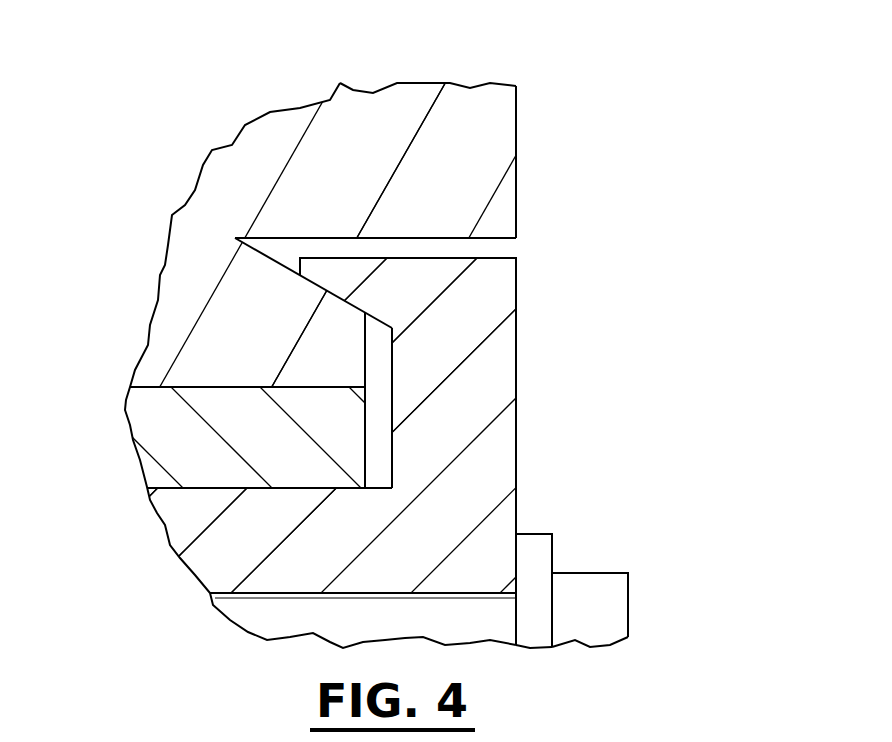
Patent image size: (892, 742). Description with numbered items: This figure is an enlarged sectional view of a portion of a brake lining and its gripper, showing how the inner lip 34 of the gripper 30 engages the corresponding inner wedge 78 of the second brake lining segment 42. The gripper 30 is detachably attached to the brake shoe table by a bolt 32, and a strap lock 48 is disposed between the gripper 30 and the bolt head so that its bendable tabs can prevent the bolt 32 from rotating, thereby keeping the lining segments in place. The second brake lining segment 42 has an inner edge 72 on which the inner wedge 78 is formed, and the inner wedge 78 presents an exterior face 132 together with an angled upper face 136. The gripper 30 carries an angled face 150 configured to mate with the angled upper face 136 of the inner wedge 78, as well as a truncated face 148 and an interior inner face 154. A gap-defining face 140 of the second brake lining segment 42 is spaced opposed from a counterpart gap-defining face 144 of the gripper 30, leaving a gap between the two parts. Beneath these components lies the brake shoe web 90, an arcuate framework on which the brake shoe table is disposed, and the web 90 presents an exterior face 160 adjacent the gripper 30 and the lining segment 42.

The gripper 30 is at (533, 497).
The bolt 32 is at (618, 603).
The inner lip 34 is at (395, 300).
The second brake lining segment 42 is at (522, 112).
The strap lock 48 is at (554, 553).
The inner edge 72 is at (518, 168).
The inner wedge 78 is at (318, 366).
The brake shoe web 90 is at (248, 450).
The exterior face 132 is at (394, 349).
The angled upper face 136 is at (318, 280).
The gap-defining face 140 is at (504, 242).
The gap-defining face 144 is at (504, 257).
The truncated face 148 is at (299, 257).
The angled face 150 is at (332, 312).
The interior inner face 154 is at (383, 458).
The exterior face 160 is at (366, 405).